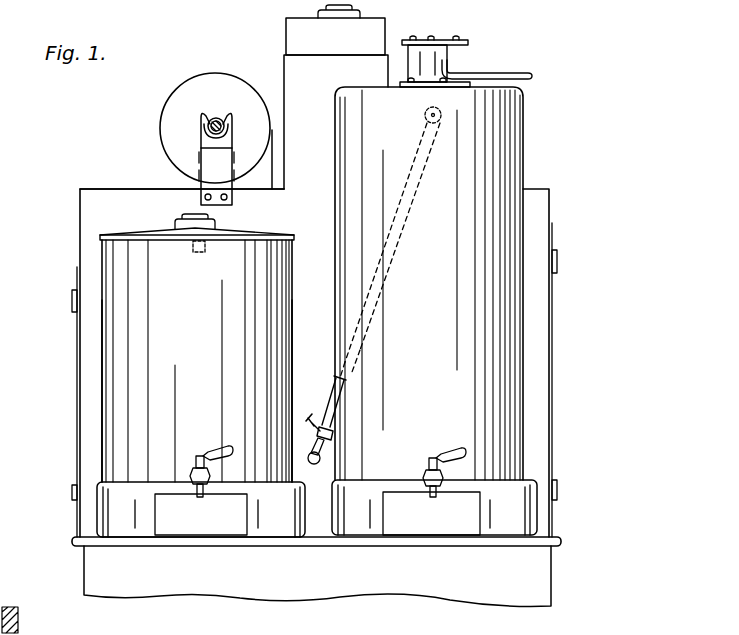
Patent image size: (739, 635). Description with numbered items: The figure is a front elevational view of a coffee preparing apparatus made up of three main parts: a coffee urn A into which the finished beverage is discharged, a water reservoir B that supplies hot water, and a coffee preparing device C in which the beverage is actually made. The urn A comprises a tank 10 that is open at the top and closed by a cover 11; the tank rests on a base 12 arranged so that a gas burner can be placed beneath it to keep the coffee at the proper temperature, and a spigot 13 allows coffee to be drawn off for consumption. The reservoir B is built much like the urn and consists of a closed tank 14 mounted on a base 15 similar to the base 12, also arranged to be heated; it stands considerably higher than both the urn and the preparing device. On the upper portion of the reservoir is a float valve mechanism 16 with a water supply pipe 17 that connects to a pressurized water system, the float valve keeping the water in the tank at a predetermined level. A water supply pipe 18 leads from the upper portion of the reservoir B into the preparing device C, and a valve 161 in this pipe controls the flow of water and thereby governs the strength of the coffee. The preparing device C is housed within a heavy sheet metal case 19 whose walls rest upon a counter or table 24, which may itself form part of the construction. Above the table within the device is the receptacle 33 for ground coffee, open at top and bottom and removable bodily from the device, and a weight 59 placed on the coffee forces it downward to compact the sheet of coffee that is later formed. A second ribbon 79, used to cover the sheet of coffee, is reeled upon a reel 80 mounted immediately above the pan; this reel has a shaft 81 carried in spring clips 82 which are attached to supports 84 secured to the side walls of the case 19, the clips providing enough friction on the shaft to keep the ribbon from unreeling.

The coffee urn A is at (115, 354).
The water reservoir B is at (525, 378).
The coffee preparing device C is at (545, 215).
The tank 10 is at (137, 431).
The cover 11 is at (120, 233).
The base 12 is at (137, 527).
The spigot 13 is at (218, 445).
The closed tank 14 is at (523, 337).
The base 15 is at (527, 515).
The float valve mechanism 16 is at (457, 55).
The water supply pipe 17 is at (518, 70).
The water supply pipe 18 is at (333, 378).
The case 19 is at (87, 253).
The counter or table 24 is at (562, 543).
The receptacle for ground coffee 33 is at (292, 72).
The weight 59 is at (382, 34).
The second ribbon 79 is at (270, 190).
The reel 80 is at (163, 138).
The shaft 81 is at (216, 118).
The spring clips 82 is at (203, 120).
The supports 84 is at (212, 165).
The valve 161 is at (322, 412).